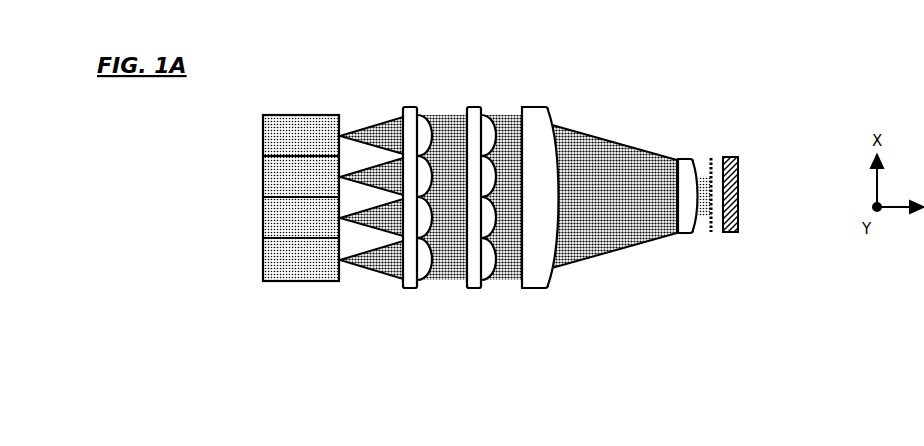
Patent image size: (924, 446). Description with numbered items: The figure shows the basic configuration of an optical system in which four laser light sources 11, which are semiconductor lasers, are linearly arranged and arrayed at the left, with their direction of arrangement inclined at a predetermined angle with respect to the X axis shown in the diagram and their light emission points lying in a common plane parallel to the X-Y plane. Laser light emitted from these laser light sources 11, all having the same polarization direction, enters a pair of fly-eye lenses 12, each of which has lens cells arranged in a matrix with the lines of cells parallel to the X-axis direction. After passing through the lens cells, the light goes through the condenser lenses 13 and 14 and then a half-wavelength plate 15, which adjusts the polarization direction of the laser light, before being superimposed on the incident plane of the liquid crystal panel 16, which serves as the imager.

The laser light sources 11 is at (239, 126).
The fly-eye lenses 12 is at (488, 93).
The condenser lens 13 is at (553, 107).
The condenser lens 14 is at (688, 163).
The half-wavelength plate 15 is at (710, 233).
The liquid crystal panel 16 is at (738, 176).